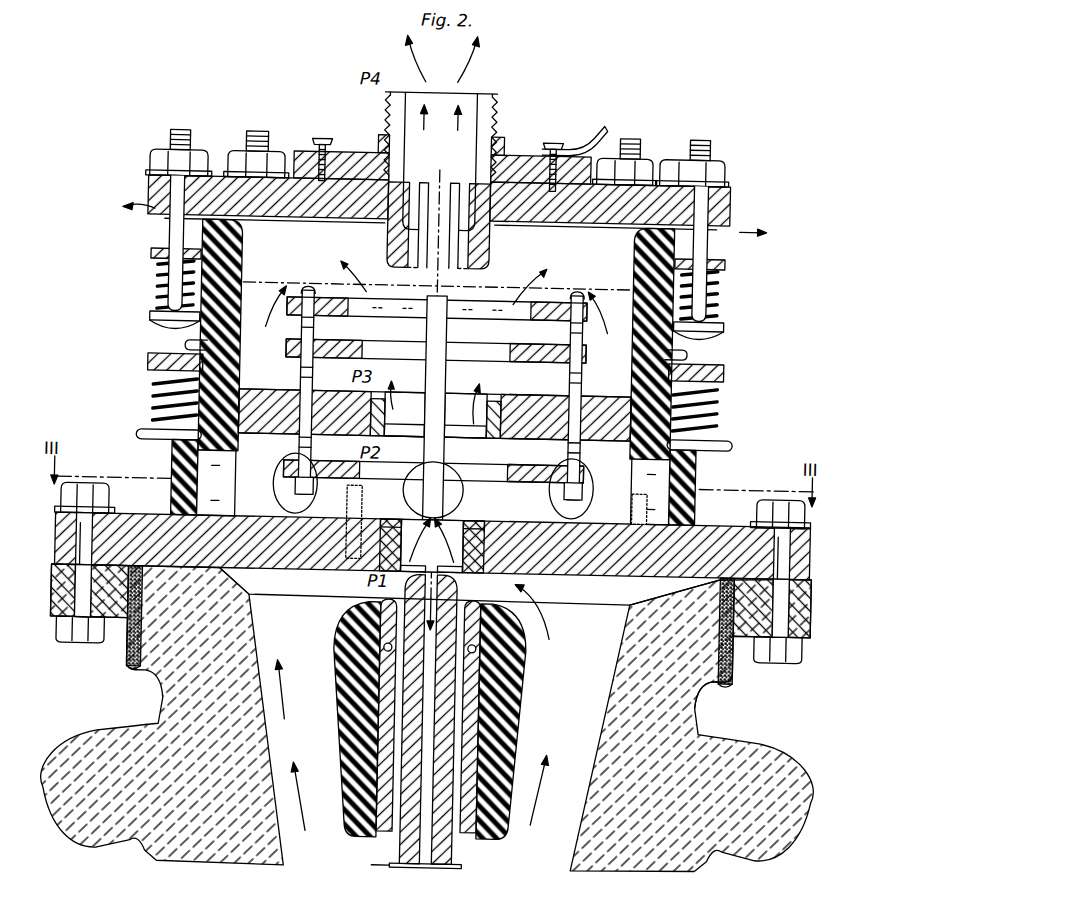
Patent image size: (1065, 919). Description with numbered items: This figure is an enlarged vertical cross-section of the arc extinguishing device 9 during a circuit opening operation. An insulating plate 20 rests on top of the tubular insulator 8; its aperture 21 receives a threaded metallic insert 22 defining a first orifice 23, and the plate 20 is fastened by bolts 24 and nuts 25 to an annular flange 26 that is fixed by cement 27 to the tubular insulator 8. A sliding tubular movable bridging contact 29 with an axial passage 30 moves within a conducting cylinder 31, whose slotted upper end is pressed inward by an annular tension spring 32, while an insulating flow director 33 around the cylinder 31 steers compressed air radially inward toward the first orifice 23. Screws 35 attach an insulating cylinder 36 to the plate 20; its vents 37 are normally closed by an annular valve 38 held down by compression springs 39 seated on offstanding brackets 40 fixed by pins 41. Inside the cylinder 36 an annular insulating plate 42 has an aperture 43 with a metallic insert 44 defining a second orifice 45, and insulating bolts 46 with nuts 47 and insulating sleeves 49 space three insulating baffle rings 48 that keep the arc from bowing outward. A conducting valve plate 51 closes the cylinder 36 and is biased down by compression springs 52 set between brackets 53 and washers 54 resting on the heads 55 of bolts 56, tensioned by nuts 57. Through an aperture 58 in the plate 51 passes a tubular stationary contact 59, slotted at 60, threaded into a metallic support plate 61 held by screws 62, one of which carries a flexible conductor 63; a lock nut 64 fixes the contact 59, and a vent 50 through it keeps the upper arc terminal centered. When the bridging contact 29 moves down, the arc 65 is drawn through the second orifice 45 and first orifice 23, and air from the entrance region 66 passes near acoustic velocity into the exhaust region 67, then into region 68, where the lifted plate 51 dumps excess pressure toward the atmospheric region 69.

The tubular insulator 8 is at (766, 860).
The arc extinguishing device 9 is at (102, 315).
The insulating plate 20 is at (515, 523).
The aperture 21 is at (486, 522).
The metallic insert 22 is at (484, 520).
The first orifice 23 is at (466, 568).
The bolts 24 is at (100, 650).
The nuts 25 is at (108, 500).
The annular flange 26 is at (752, 682).
The cement 27 is at (731, 680).
The tubular movable bridging contact 29 is at (426, 878).
The axial passage 30 is at (430, 868).
The conducting cylinder 31 is at (470, 851).
The annular tension spring 32 is at (520, 652).
The insulating flow director 33 is at (528, 684).
The screws 35 is at (690, 501).
The insulating cylinder 36 is at (672, 340).
The vents 37 is at (236, 471).
The annular valve 38 is at (172, 474).
The compression springs 39 is at (152, 387).
The offstanding brackets 40 is at (146, 366).
The pins 41 is at (183, 350).
The annular insulating plate 42 is at (596, 395).
The aperture 43 is at (512, 396).
The metallic insert 44 is at (486, 400).
The second orifice 45 is at (470, 437).
The insulating bolts 46 is at (300, 301).
The nuts 47 is at (433, 487).
The insulating baffle rings 48 is at (330, 342).
The insulating sleeves 49 is at (298, 341).
The vent 50 is at (462, 270).
The conducting valve plate 51 is at (668, 181).
The compression springs 52 is at (154, 281).
The brackets 53 is at (147, 259).
The washers 54 is at (152, 317).
The heads 55 is at (162, 335).
The bolts 56 is at (244, 136).
The nuts 57 is at (226, 160).
The aperture 58 is at (383, 228).
The tubular stationary contact 59 is at (486, 241).
The slot 60 is at (423, 192).
The metallic support plate 61 is at (300, 154).
The screws 62 is at (314, 141).
The flexible conductor 63 is at (592, 130).
The lock nut 64 is at (498, 146).
The arc 65 is at (424, 336).
The entrance region 66 is at (351, 591).
The exhaust region 67 is at (364, 502).
The exhaust region 68 is at (349, 272).
The region above the stationary contact 69 is at (443, 54).